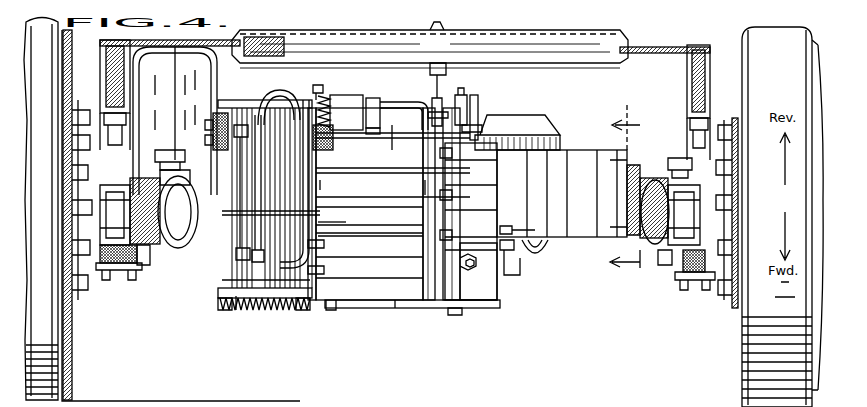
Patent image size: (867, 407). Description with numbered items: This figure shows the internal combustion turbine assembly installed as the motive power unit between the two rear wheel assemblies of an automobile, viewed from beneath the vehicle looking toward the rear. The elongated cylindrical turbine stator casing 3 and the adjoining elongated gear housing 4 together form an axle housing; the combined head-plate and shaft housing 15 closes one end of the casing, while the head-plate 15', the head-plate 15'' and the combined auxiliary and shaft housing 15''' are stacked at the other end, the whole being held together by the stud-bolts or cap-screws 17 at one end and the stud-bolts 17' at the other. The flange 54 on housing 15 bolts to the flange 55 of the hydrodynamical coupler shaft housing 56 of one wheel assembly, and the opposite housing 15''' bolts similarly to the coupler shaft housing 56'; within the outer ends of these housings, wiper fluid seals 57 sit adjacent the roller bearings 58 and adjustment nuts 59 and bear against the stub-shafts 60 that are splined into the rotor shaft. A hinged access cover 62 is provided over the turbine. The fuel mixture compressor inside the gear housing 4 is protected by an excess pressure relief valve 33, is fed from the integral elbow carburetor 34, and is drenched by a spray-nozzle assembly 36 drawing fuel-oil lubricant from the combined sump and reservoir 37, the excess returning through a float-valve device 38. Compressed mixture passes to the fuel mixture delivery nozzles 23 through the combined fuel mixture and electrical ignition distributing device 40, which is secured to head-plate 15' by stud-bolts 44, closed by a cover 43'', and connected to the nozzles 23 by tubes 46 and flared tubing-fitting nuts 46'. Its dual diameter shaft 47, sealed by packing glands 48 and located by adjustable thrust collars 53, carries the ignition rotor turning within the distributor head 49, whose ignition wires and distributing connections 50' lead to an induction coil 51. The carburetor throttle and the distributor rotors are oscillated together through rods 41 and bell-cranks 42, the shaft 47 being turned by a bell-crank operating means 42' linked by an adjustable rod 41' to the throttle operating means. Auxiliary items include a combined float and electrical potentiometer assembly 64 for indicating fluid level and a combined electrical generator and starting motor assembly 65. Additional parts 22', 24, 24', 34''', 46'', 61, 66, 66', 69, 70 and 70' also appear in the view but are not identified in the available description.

The turbine stator casing 3 is at (257, 326).
The gear housing 4 is at (370, 302).
The combined head-plate and shaft housing 15 is at (241, 283).
The head-plate 15' is at (344, 186).
The head-plate 15'' is at (409, 187).
The combined auxiliary and shaft housing 15''' is at (497, 278).
The stud-bolts and/or cap-screws 17 is at (241, 301).
The stud-bolts 17' is at (370, 243).
The foot bracket 22' is at (251, 312).
The fuel mixture delivery nozzles 23 is at (241, 124).
The support 24 is at (232, 315).
The cross bar 24' is at (270, 215).
The excess pressure relief valve 33 is at (436, 110).
The integral elbow carburetor 34 is at (522, 258).
The cylinder cover 34''' is at (529, 127).
The spray-nozzle assembly 36 is at (455, 316).
The combined sump and reservoir 37 is at (398, 310).
The float-valve device 38 is at (328, 312).
The combined fuel mixture and electrical ignition distributing device 40 is at (343, 95).
The rods 41 is at (553, 257).
The adjustable rod 41' is at (485, 109).
The bell-cranks 42 is at (517, 220).
The bell-crank operating means 42' is at (489, 105).
The cover 43'' is at (361, 119).
The stud-bolts 44 is at (317, 85).
The tubes 46 is at (329, 243).
The flared type tubing-fitting nuts 46' is at (331, 270).
The bracket 46'' is at (350, 222).
The dual diameter rod and/or shaft 47 is at (433, 94).
The packing glands 48 is at (366, 106).
The distributor head 49 is at (270, 97).
The ignition wires and distributing connections 50' is at (292, 170).
The electrical induction coil 51 is at (395, 128).
The adjustable thrust collars 53 is at (462, 95).
The flange 54 is at (138, 266).
The flange 55 is at (118, 270).
The hydrodynamical coupler shaft housing 56 is at (62, 215).
The hydrodynamical coupler shaft housing 56' is at (749, 213).
The wiper fluid seals 57 is at (148, 262).
The roller bearings 58 is at (158, 160).
The adjustment nuts 59 is at (172, 200).
The stub-shafts 60 is at (700, 178).
The ring 61 is at (190, 182).
The hinged access cover 62 is at (588, 31).
The combined float and electrical potentiometer assembly 64 is at (520, 277).
The combined electrical generator and starting motor assembly 65 is at (578, 150).
The hatched block 66 is at (209, 120).
The hatched block 66' is at (341, 144).
The housing 69 is at (497, 158).
The pipe 70 is at (414, 100).
The pipe 70' is at (385, 89).